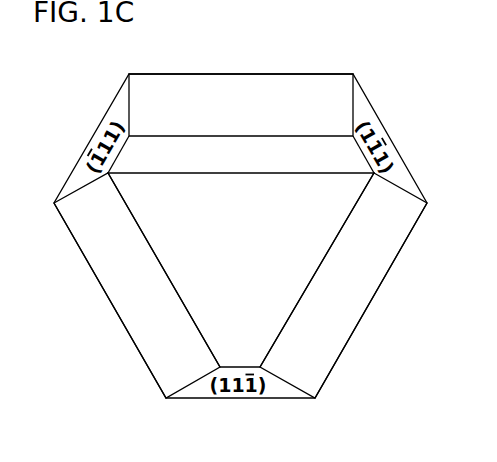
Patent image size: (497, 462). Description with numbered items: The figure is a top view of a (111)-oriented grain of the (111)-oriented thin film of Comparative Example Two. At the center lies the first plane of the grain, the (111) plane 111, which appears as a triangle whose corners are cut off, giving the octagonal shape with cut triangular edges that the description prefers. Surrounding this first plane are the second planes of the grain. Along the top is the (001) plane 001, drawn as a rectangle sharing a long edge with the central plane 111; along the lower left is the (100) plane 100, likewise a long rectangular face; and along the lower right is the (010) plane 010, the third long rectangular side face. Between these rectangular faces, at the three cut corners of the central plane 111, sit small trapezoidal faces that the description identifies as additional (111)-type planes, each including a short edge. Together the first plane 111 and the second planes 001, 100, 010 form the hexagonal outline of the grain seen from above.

The (111) plane 111 is at (241, 270).
The (001) plane 001 is at (241, 105).
The (100) plane 100 is at (137, 285).
The (010) plane 010 is at (343, 285).